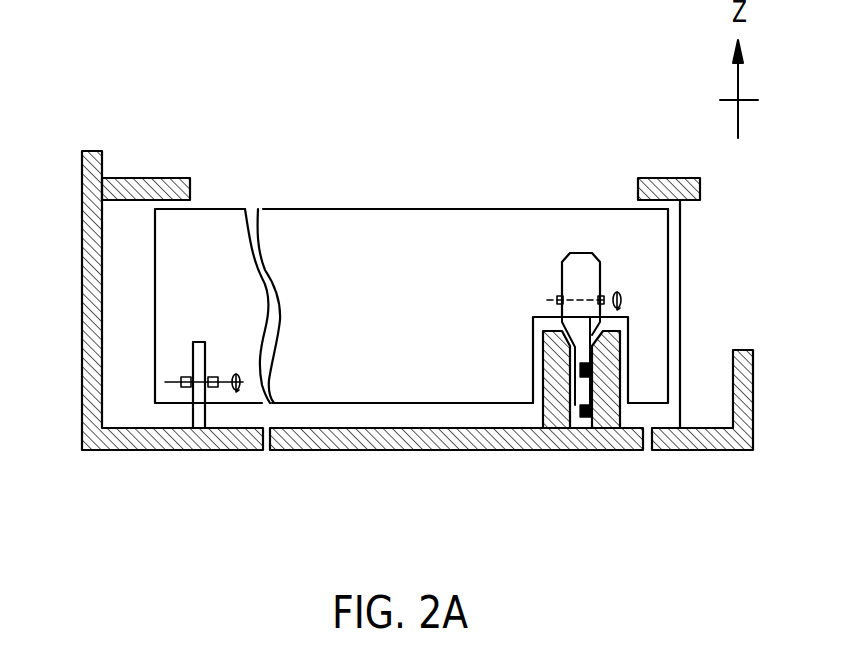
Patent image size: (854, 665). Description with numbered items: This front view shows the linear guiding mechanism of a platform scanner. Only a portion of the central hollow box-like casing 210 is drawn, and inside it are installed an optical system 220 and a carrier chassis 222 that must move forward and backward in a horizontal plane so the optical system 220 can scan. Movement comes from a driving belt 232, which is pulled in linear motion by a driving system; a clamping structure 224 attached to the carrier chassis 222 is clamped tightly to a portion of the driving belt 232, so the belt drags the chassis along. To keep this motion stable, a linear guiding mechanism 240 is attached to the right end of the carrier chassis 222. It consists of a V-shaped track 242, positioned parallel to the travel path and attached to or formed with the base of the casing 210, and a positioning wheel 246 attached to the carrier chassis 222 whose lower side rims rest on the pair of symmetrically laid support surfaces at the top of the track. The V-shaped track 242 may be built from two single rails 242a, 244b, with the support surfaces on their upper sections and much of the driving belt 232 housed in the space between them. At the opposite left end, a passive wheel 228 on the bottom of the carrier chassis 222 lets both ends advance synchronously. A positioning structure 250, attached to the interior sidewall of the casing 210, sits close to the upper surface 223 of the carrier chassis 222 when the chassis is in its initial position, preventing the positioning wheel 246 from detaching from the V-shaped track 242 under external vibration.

The casing 210 is at (725, 450).
The optical system 220 is at (224, 196).
The carrier chassis 222 is at (246, 215).
The upper surface 223 is at (392, 206).
The clamping structure 224 is at (622, 362).
The passive wheel 228 is at (198, 362).
The driving belt 232 is at (592, 410).
The linear guiding mechanism 240 is at (412, 473).
The V-shaped track 242 is at (521, 445).
The left pillar 242a is at (557, 450).
The second rail 244b is at (603, 450).
The positioning wheel 246 is at (570, 340).
The positioning structure 250 is at (143, 178).